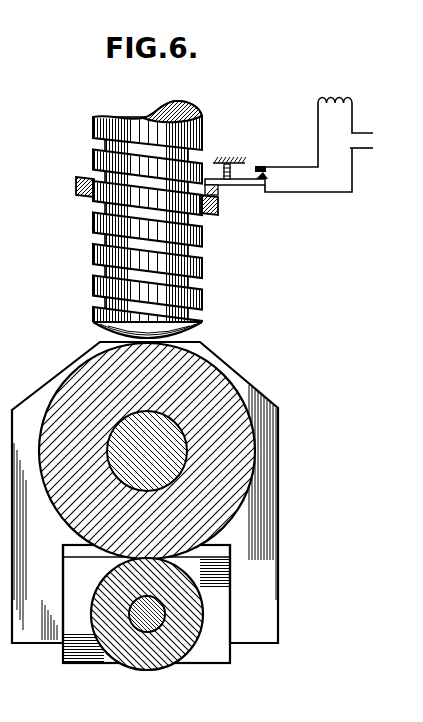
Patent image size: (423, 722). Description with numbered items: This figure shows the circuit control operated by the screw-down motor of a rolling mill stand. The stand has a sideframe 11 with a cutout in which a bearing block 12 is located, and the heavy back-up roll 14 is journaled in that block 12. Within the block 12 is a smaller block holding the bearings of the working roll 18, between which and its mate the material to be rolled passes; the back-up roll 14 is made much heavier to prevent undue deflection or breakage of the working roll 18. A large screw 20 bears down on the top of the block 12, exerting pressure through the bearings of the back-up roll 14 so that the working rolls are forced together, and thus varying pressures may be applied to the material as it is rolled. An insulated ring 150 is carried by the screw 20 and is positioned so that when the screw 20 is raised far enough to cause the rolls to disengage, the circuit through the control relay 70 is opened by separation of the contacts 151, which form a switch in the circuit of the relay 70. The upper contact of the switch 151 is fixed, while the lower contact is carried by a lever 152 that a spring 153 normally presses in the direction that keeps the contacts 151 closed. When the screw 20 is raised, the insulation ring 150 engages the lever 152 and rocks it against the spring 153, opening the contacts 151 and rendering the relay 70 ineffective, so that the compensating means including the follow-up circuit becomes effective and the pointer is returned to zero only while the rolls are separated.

The sideframe 11 is at (0, 248).
The bearing block 12 is at (265, 557).
The back-up roll 14 is at (235, 455).
The working roll 18 is at (165, 656).
The screw 20 is at (205, 263).
The control relay 70 is at (345, 93).
The insulated ring 150 is at (89, 196).
The contacts 151 is at (263, 168).
The lever 152 is at (230, 186).
The spring 153 is at (233, 168).